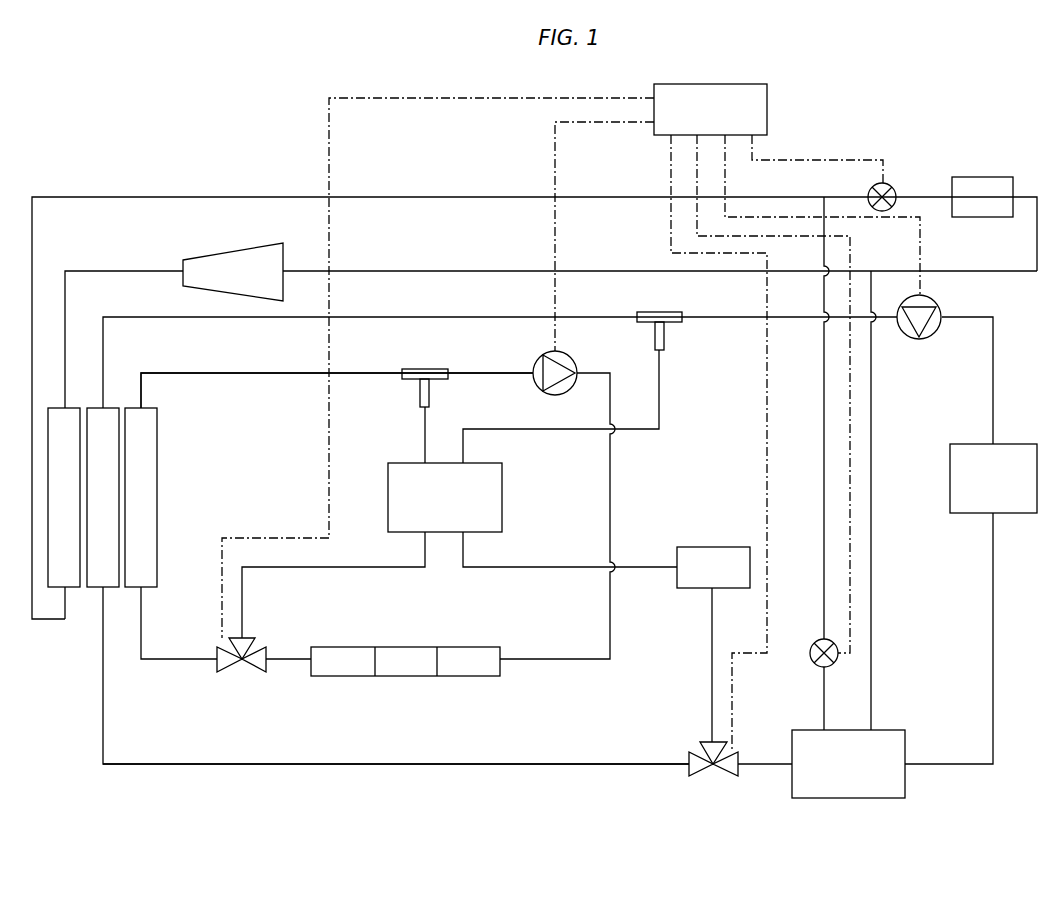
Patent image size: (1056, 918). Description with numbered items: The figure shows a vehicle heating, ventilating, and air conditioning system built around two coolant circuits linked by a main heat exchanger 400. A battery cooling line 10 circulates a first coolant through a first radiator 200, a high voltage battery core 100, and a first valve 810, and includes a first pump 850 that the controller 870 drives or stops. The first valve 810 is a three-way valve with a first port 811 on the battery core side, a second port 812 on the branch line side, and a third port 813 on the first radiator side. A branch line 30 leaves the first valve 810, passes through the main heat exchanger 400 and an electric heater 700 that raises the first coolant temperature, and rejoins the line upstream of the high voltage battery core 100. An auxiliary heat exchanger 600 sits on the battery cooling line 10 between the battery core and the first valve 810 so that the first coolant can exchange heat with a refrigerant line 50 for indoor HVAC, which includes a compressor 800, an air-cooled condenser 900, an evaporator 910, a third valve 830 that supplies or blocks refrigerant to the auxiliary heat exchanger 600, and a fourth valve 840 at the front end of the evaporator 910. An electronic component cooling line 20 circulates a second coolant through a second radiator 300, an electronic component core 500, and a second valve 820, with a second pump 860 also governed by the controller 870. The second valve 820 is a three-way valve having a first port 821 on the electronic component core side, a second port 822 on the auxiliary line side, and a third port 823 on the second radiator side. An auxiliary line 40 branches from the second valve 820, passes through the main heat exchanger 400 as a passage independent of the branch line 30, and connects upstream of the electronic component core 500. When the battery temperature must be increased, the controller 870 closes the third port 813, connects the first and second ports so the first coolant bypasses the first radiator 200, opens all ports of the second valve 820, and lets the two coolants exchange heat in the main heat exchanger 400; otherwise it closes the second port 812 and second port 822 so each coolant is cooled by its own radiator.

The battery cooling line 10 is at (437, 766).
The electronic component cooling line 20 is at (275, 374).
The branch line 30 is at (661, 403).
The auxiliary line 40 is at (422, 442).
The refrigerant line 50 is at (460, 196).
The high voltage battery core 100 is at (957, 514).
The first radiator 200 is at (108, 408).
The second radiator 300 is at (158, 468).
The main heat exchanger 400 is at (503, 498).
The electronic component core 500 is at (400, 647).
The auxiliary heat exchanger 600 is at (905, 782).
The electric heater 700 is at (707, 547).
The compressor 800 is at (183, 262).
The first valve 810 is at (685, 771).
The first port 811 is at (730, 778).
The second port 812 is at (700, 743).
The third port 813 is at (690, 776).
The second valve 820 is at (224, 667).
The first port 821 is at (257, 672).
The second port 822 is at (250, 638).
The third port 823 is at (216, 672).
The third valve 830 is at (815, 643).
The fourth valve 840 is at (889, 185).
The first pump 850 is at (921, 340).
The second pump 860 is at (538, 360).
The controller 870 is at (767, 112).
The air-cooled condenser 900 is at (72, 590).
The evaporator 910 is at (988, 177).